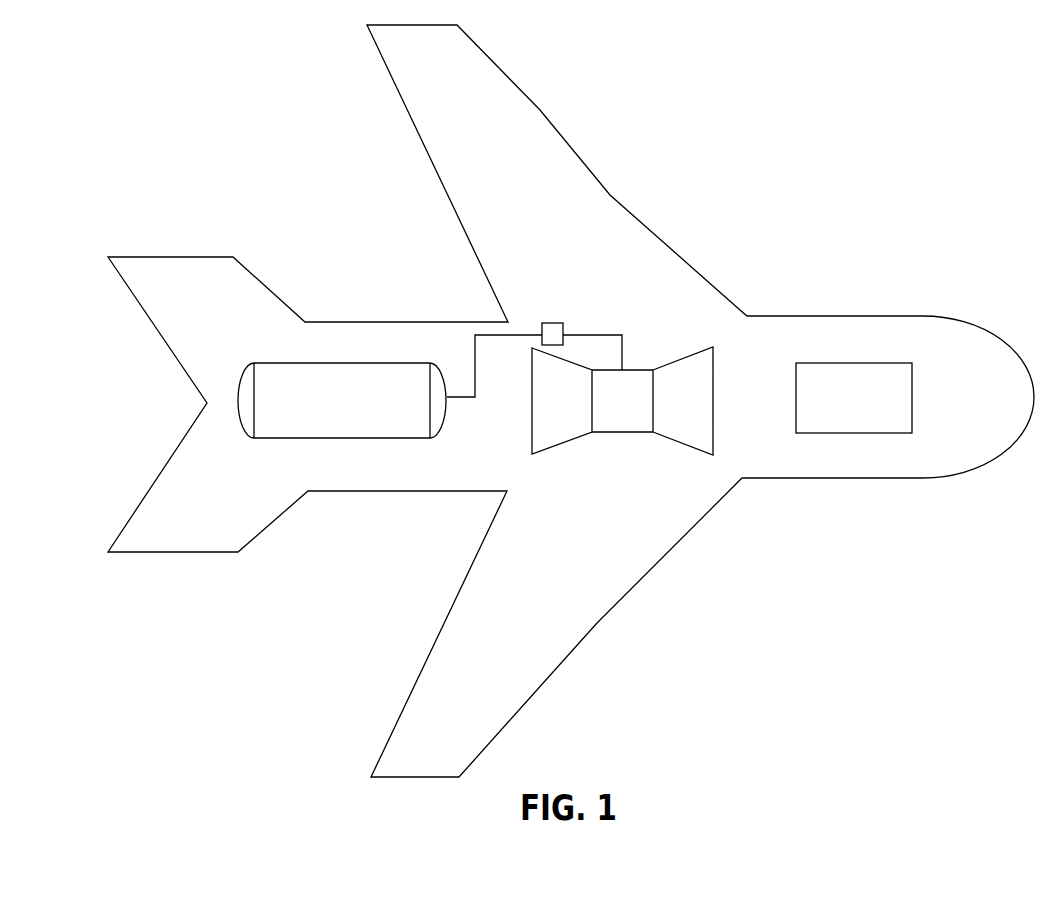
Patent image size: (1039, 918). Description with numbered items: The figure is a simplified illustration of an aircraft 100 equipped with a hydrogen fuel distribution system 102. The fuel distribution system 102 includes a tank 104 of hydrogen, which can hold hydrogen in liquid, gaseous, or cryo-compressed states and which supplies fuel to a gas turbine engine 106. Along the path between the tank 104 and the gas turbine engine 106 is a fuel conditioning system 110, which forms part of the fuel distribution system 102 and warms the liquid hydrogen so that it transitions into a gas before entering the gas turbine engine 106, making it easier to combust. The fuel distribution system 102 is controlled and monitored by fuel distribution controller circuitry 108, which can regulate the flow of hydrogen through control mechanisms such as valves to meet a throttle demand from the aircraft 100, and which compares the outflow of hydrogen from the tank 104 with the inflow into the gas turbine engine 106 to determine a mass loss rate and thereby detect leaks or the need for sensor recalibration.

The aircraft 100 is at (845, 316).
The fuel distribution system 102 is at (602, 335).
The tank 104 is at (363, 363).
The gas turbine engine 106 is at (693, 447).
The fuel distribution controller circuitry 108 is at (893, 363).
The fuel conditioning system 110 is at (550, 323).